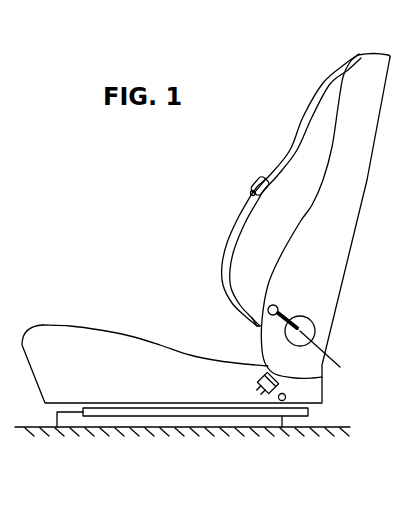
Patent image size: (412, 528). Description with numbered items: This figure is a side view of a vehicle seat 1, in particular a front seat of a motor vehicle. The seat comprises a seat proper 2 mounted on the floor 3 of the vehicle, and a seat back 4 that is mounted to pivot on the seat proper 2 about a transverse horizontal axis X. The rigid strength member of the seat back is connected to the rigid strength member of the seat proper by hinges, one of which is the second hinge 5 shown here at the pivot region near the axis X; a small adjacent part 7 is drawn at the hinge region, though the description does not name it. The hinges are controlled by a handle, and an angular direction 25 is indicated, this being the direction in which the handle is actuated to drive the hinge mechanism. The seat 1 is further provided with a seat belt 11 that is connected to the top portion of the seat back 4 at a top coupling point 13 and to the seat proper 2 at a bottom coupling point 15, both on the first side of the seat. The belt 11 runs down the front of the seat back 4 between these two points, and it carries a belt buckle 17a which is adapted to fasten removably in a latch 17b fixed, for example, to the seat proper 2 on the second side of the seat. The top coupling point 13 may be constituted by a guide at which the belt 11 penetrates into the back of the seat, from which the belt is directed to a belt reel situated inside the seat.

The vehicle seat 1 is at (248, 153).
The seat proper 2 is at (98, 345).
The floor 3 is at (315, 432).
The seat back 4 is at (347, 170).
The second hinge 5 is at (309, 331).
The locking member 7 is at (283, 313).
The seat belt 11 is at (318, 80).
The top coupling point 13 is at (352, 48).
The bottom coupling point 15 is at (245, 326).
The belt buckle 17a is at (250, 182).
The latch 17b is at (265, 393).
The angular direction 25 is at (195, 253).
The transverse horizontal axis X is at (325, 357).